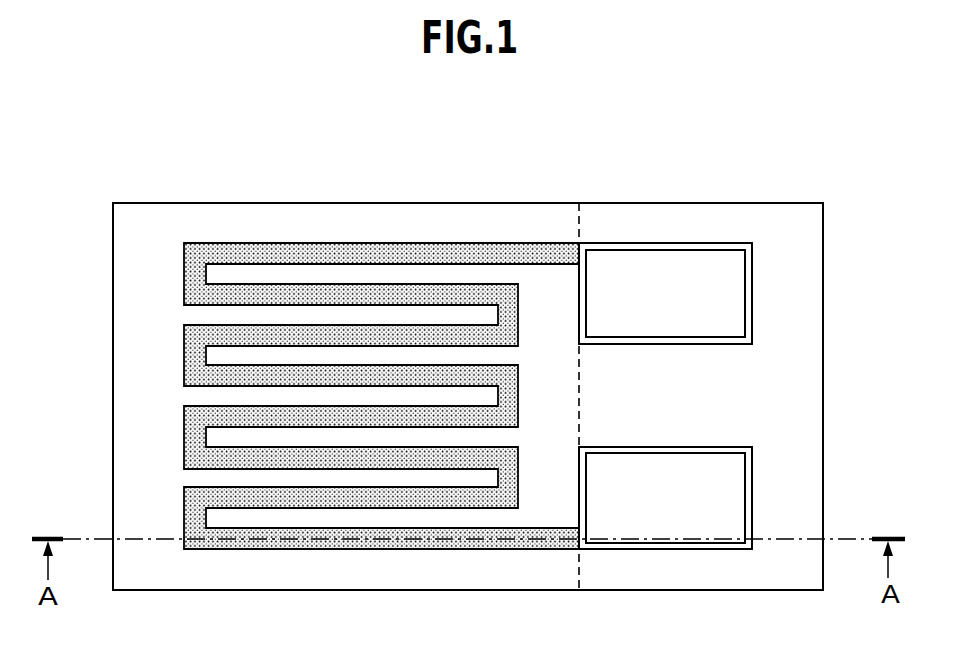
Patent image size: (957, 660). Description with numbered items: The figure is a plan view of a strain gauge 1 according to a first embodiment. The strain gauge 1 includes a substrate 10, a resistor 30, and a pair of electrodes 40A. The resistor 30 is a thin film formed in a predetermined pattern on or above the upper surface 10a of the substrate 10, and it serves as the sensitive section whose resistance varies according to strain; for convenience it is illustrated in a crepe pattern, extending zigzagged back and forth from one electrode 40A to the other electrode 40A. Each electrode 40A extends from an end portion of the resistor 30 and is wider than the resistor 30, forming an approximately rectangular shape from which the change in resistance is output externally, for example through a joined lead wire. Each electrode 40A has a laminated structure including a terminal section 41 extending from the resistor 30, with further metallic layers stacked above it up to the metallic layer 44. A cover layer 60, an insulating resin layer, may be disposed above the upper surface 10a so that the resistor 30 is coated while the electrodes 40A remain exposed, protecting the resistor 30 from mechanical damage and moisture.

The strain gauge 1 is at (34, 146).
The substrate 10 is at (174, 193).
The upper surface 10a is at (274, 225).
The resistor 30 is at (414, 247).
The cover layer 60 is at (582, 228).
The terminal section 41 is at (648, 247).
The metallic layer 44 is at (700, 275).
The electrode 40A is at (737, 232).